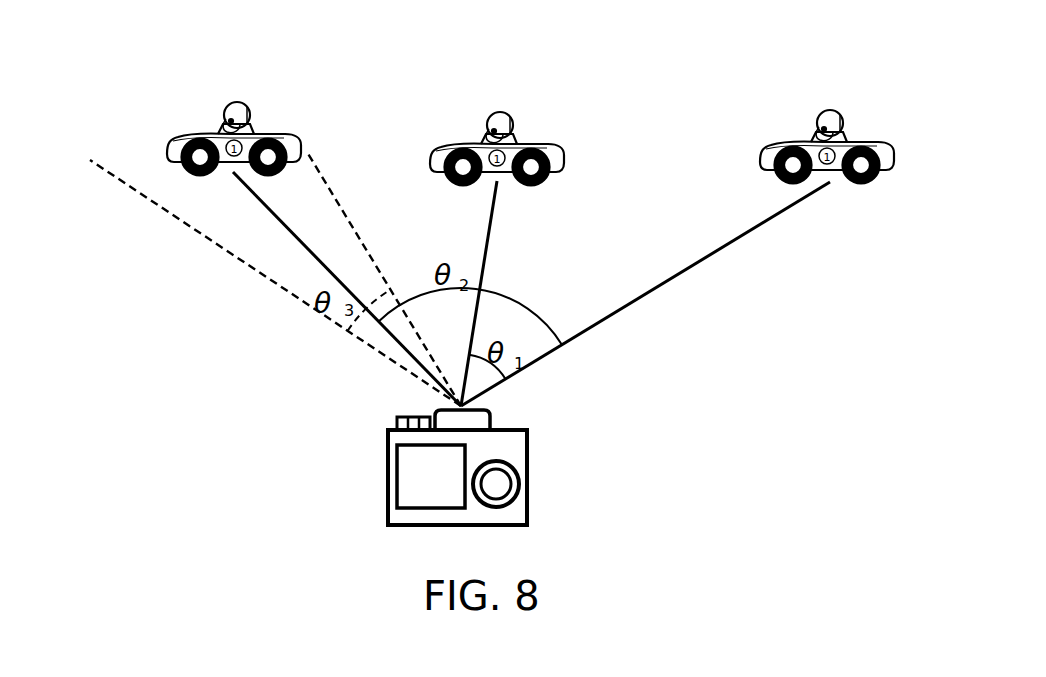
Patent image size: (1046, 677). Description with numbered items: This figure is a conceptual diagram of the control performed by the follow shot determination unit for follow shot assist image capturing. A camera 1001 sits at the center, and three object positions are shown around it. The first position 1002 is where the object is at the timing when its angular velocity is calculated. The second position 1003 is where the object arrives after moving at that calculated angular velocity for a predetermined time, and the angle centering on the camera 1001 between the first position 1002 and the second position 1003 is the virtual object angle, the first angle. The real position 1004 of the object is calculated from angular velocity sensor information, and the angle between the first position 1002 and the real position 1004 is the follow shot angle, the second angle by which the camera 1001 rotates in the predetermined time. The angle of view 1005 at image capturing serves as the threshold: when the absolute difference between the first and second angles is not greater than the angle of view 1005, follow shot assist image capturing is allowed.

The camera 1001 is at (527, 500).
The first position of the object 1002 is at (843, 120).
The second position of the object 1003 is at (523, 120).
The real position of the object 1004 is at (270, 132).
The angle of view 1005 is at (310, 296).